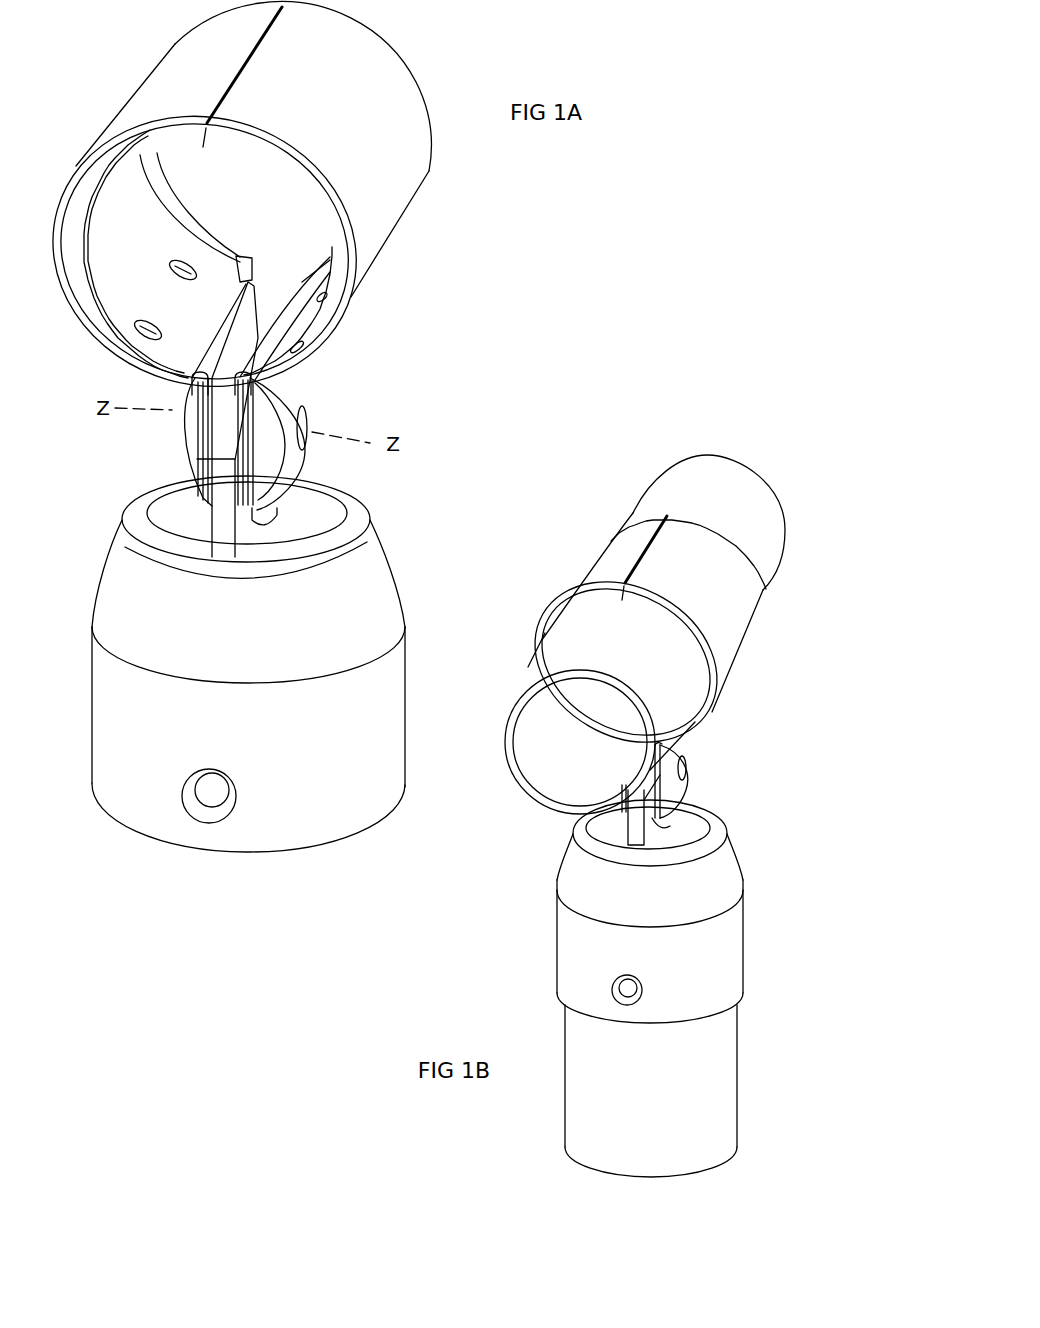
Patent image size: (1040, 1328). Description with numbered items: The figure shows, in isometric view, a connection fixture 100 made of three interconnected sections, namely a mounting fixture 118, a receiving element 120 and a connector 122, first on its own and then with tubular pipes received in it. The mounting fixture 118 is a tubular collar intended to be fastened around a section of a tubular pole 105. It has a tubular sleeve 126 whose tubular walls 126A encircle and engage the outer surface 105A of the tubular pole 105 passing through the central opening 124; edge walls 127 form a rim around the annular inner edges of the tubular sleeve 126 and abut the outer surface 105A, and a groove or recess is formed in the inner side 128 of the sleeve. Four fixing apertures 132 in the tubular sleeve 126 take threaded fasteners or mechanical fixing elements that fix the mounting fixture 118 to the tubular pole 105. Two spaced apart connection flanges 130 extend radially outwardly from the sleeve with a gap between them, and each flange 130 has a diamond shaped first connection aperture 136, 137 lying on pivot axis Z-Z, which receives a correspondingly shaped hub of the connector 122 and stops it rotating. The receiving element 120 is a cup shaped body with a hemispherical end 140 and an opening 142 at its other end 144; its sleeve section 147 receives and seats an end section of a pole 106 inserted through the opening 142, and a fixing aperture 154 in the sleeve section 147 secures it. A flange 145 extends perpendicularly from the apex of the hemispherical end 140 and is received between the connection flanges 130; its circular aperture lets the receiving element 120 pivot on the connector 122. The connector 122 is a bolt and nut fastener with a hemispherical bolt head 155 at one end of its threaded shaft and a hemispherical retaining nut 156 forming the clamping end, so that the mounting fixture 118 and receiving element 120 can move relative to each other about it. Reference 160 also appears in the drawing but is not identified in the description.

In FIG. 1A, the connection fixture 100 is at (425, 724).
In FIG. 1B, the connection fixture 100 is at (529, 915).
In FIG. 1B, the tubular pole 105 is at (743, 487).
In FIG. 1B, the outer surface 105A is at (688, 481).
In FIG. 1B, the pole 106 is at (607, 1110).
In FIG. 1A, the mounting fixture 118 is at (388, 202).
In FIG. 1B, the mounting fixture 118 is at (597, 571).
In FIG. 1A, the receiving element 120 is at (128, 705).
In FIG. 1B, the receiving element 120 is at (715, 950).
In FIG. 1A, the connector 122 is at (282, 457).
In FIG. 1B, the connector 122 is at (677, 757).
In FIG. 1A, the central opening 124 is at (122, 291).
In FIG. 1A, the tubular sleeve 126 is at (295, 25).
In FIG. 1A, the tubular walls 126A is at (360, 72).
In FIG. 1A, the edge walls 127 is at (187, 222).
In FIG. 1A, the inner side 128 is at (123, 206).
In FIG. 1A, the connection flanges 130 is at (200, 412).
In FIG. 1A, the fixing apertures 132 is at (185, 278).
In FIG. 1A, the first connection aperture 136 is at (302, 396).
In FIG. 1A, the first connection aperture 137 is at (181, 468).
In FIG. 1A, the hemispherical end 140 is at (355, 530).
In FIG. 1A, the opening 142 is at (323, 855).
In FIG. 1A, the other end 144 is at (165, 843).
In FIG. 1A, the flange 145 is at (222, 530).
In FIG. 1A, the sleeve section 147 is at (120, 580).
In FIG. 1A, the fixing aperture 154 is at (211, 795).
In FIG. 1B, the fixing aperture 154 is at (627, 990).
In FIG. 1A, the bolt head 155 is at (285, 430).
In FIG. 1A, the retaining nut 156 is at (176, 442).
In FIG. 1A, the outer surface 160 is at (186, 57).
In FIG. 1B, the outer surface 160 is at (628, 541).